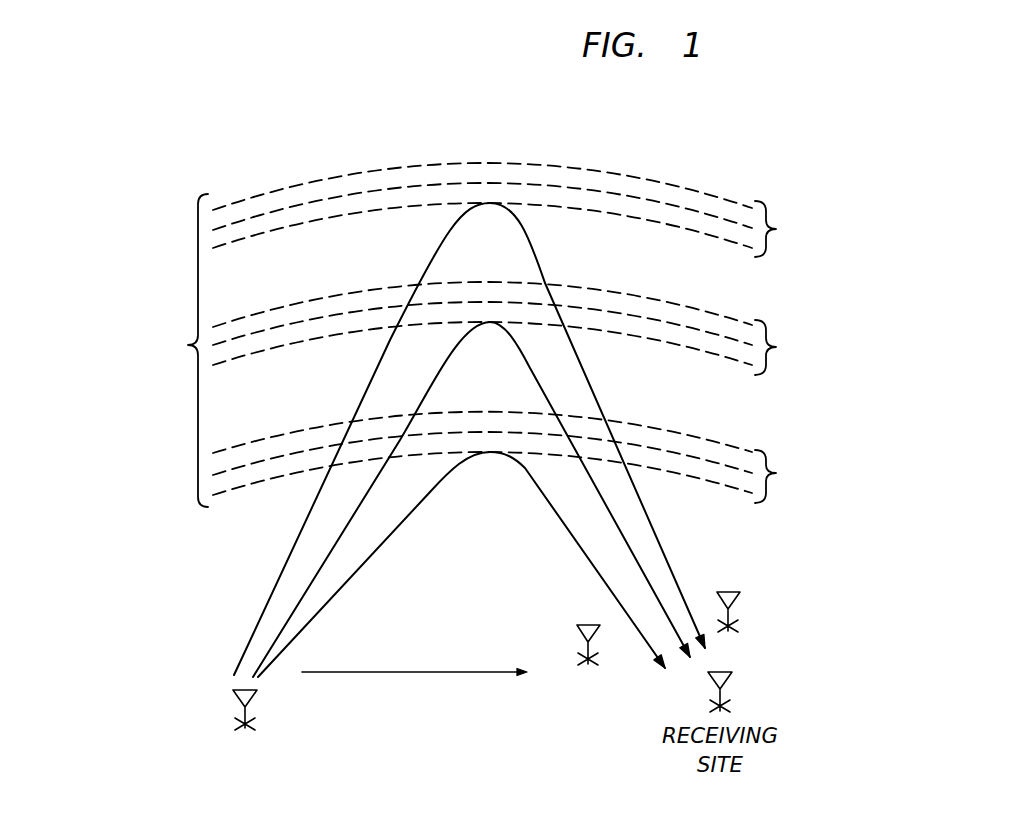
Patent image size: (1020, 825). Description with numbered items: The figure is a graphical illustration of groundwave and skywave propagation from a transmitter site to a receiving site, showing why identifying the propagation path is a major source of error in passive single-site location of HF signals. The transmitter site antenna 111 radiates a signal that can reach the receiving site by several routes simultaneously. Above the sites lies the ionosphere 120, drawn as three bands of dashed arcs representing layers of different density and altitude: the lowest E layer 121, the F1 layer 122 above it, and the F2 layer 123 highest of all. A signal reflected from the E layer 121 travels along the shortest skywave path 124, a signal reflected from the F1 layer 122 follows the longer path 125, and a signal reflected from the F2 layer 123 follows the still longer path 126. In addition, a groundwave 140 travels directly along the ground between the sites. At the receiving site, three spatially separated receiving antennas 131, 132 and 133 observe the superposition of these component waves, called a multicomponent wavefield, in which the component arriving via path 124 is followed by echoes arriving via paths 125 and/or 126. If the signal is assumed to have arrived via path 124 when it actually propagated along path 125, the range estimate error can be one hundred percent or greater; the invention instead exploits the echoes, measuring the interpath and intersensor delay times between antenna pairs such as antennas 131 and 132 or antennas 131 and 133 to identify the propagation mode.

The transmitter site antenna 111 is at (254, 728).
The ionosphere 120 is at (133, 372).
The E layer 121 is at (805, 487).
The F1 layer 122 is at (818, 359).
The F2 layer 123 is at (816, 241).
The E layer skywave path 124 is at (344, 603).
The F1 layer skywave path 125 is at (375, 510).
The F2 layer skywave path 126 is at (280, 541).
The receiving antenna 131 is at (592, 666).
The receiving antenna 132 is at (732, 702).
The receiving antenna 133 is at (739, 624).
The groundwave 140 is at (444, 662).